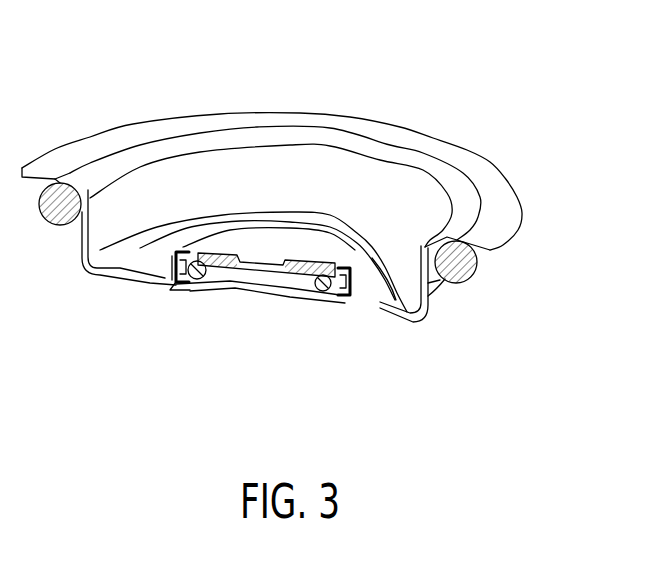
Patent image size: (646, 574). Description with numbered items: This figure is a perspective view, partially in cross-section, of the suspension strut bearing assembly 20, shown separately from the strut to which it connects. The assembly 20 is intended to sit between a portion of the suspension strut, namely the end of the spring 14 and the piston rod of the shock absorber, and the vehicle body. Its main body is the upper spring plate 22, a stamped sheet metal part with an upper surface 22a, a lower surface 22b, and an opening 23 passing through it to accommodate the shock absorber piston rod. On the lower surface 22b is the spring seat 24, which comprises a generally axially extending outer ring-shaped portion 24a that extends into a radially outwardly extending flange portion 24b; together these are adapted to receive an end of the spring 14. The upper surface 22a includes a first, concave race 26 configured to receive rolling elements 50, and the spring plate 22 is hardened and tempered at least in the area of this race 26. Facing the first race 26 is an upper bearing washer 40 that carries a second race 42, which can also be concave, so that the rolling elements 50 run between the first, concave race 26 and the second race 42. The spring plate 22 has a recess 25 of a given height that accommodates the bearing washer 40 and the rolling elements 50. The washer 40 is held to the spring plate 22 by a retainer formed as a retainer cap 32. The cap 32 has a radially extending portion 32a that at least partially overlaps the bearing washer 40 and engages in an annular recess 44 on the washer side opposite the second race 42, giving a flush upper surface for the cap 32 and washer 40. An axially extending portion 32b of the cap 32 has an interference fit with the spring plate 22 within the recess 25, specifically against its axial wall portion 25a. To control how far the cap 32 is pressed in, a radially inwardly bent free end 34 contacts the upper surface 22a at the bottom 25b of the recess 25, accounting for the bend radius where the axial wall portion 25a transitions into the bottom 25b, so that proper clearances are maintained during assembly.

The suspension strut bearing assembly 20 is at (297, 101).
The upper spring plate 22 is at (505, 219).
The upper surface 22a is at (0, 87).
The lower surface 22b is at (407, 321).
The spring seat 24 is at (47, 222).
The outer ring-shaped portion 24a is at (435, 292).
The flange portion 24b is at (496, 248).
The spring 14 is at (468, 273).
The recess 25 is at (352, 240).
The axial wall portion 25a is at (408, 326).
The bottom 25b is at (307, 300).
The opening 23 is at (243, 285).
The first, concave race 26 is at (198, 284).
The retainer cap 32 is at (182, 285).
The radially extending portion 32a is at (168, 287).
The axially extending portion 32b is at (167, 268).
The radially inwardly bent free end 34 is at (180, 288).
The upper bearing washer 40 is at (312, 238).
The second race 42 is at (210, 252).
The annular recess 44 is at (365, 297).
The rolling elements 50 is at (333, 300).